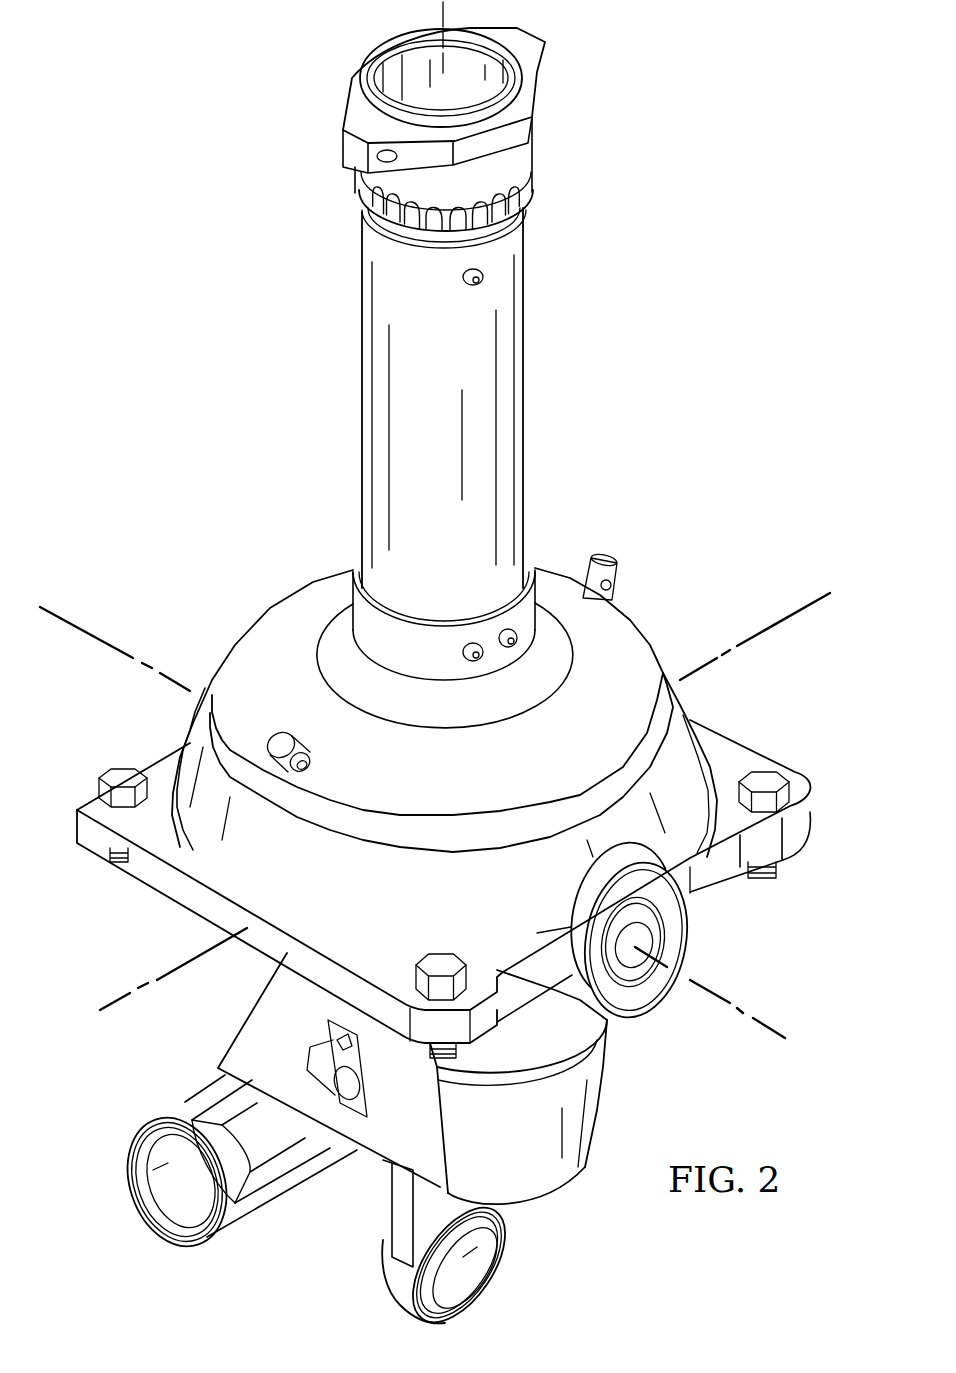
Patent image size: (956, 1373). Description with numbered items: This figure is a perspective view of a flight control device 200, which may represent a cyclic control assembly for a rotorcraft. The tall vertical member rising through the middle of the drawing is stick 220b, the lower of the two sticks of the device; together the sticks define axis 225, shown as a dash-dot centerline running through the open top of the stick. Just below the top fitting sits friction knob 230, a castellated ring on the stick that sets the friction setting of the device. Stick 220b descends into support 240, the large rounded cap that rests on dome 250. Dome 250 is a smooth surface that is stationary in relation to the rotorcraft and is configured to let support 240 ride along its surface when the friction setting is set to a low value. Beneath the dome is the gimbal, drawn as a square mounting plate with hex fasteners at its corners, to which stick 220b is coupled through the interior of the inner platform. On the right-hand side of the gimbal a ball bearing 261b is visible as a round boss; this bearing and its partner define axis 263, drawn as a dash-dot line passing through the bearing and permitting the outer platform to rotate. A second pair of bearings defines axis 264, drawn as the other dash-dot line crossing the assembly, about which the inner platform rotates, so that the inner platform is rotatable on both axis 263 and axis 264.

The flight control device 200 is at (232, 197).
The axis 225 is at (441, 12).
The friction knob 230 is at (533, 157).
The stick 220b is at (525, 393).
The support 240 is at (291, 597).
The dome 250 is at (193, 733).
The ball bearing 261b is at (660, 932).
The axis 263 is at (710, 987).
The axis 264 is at (757, 633).